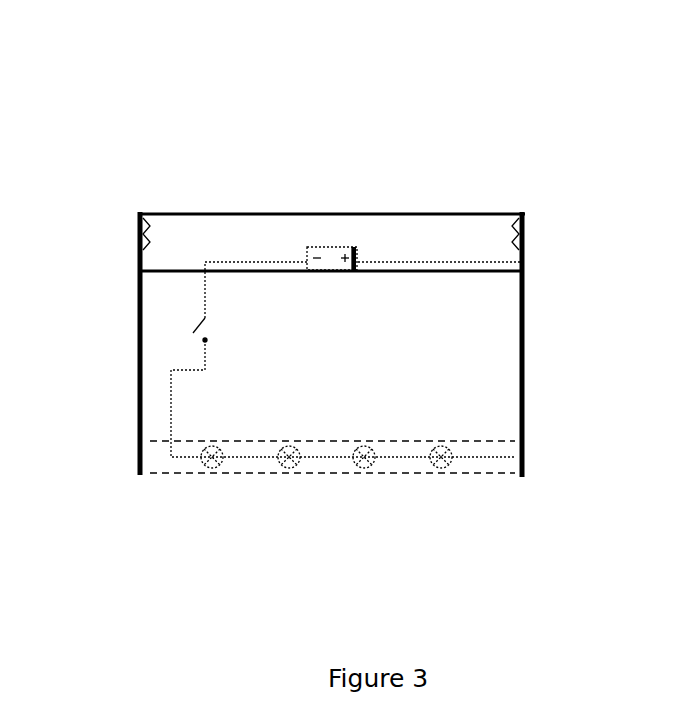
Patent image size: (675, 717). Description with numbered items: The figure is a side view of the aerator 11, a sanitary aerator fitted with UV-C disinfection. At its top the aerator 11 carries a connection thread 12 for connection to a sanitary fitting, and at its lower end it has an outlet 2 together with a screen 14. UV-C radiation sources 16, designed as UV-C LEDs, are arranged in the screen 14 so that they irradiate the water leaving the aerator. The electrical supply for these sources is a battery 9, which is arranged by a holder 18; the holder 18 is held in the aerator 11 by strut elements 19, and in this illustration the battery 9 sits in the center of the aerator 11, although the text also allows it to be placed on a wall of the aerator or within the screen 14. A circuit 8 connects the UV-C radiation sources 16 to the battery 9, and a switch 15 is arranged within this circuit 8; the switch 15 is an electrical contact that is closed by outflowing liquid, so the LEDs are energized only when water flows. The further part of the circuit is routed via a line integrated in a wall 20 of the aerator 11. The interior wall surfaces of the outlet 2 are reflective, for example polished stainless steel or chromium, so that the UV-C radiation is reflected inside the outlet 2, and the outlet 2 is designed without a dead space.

The outlet 2 is at (350, 398).
The circuit 8 is at (171, 401).
The battery 9 is at (345, 257).
The aerator 11 is at (214, 131).
The connection thread 12 is at (140, 214).
The screen 14 is at (497, 452).
The switch 15 is at (207, 338).
The UV-C radiation sources 16 is at (432, 466).
The holder 18 is at (355, 262).
The strut elements 19 is at (378, 274).
The wall 20 is at (526, 348).